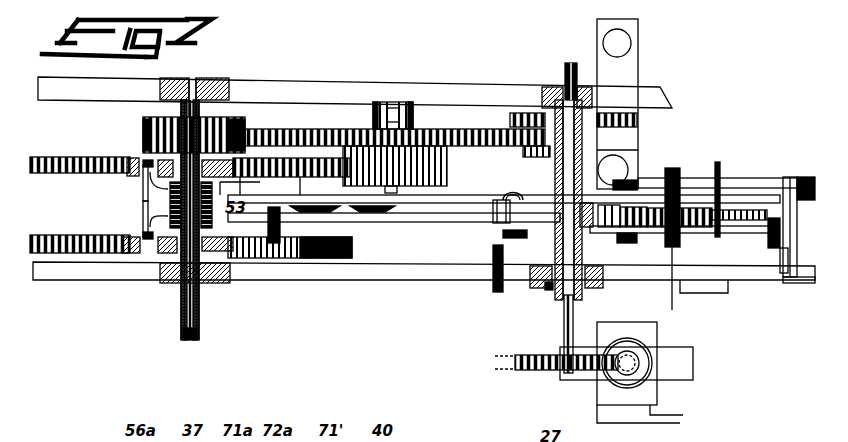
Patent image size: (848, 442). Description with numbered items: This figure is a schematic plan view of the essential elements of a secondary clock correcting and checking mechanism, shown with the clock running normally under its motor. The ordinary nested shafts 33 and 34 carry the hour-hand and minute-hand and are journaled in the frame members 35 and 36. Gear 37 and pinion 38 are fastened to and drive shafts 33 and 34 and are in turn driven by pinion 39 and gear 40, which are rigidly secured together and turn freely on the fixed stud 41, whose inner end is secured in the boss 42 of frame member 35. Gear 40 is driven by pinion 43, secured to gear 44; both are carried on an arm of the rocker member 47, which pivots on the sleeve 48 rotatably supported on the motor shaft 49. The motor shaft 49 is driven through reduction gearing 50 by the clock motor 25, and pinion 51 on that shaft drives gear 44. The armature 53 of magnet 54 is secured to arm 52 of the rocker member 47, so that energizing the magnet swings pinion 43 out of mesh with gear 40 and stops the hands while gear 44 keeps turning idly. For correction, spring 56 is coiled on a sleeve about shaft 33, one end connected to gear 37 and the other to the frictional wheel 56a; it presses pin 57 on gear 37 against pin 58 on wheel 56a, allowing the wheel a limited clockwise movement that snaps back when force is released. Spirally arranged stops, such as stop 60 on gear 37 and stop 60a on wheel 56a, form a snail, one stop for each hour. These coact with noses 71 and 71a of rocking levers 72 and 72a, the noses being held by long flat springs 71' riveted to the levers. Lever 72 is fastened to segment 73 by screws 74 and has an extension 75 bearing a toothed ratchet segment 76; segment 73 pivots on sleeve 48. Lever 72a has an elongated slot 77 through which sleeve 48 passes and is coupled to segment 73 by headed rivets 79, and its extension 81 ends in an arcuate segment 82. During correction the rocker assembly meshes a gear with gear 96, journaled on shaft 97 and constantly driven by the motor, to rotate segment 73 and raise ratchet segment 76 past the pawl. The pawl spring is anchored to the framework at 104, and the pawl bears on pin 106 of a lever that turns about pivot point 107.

The clock motor 25 is at (690, 346).
The shaft 33 is at (180, 306).
The shaft 34 is at (185, 340).
The frame member 35 is at (245, 96).
The frame member 36 is at (330, 278).
The gear 37 is at (55, 171).
The pinion 38 is at (160, 141).
The pinion 39 is at (440, 166).
The gear 40 is at (465, 140).
The fixed shaft or stud 41 is at (376, 119).
The boss 42 is at (404, 129).
The pinion 43 is at (546, 152).
The gear 44 is at (512, 122).
The rocker member 47 is at (521, 193).
The sleeve 48 is at (548, 288).
The motor shaft 49 is at (576, 311).
The reduction gearing 50 is at (552, 368).
The pinion 51 is at (560, 88).
The arm 52 is at (680, 186).
The armature 53 is at (632, 43).
The magnet 54 is at (648, 422).
The spring 56 is at (170, 206).
The frictional wheel 56a is at (108, 258).
The pin 57 is at (146, 166).
The pin 58 is at (148, 220).
The stop 60 is at (140, 171).
The stop 60a is at (140, 236).
The nose 71 is at (289, 200).
The long flat spring 71' is at (342, 207).
The nose 71a is at (234, 260).
The rocking lever 72 is at (356, 200).
The rocking lever 72a is at (372, 218).
The segment 73 is at (610, 228).
The screws 74 is at (498, 203).
The extension 75 is at (722, 213).
The toothed ratchet segment 76 is at (770, 198).
The elongated slot 77 is at (546, 237).
The headed rivets 79 is at (630, 220).
The extension 81 is at (729, 234).
The arcuate segment 82 is at (775, 249).
The gear 96 is at (684, 228).
The shaft 97 is at (670, 283).
The framework attachment point 104 is at (722, 166).
The pin 106 is at (786, 273).
The pivot point 107 is at (796, 284).